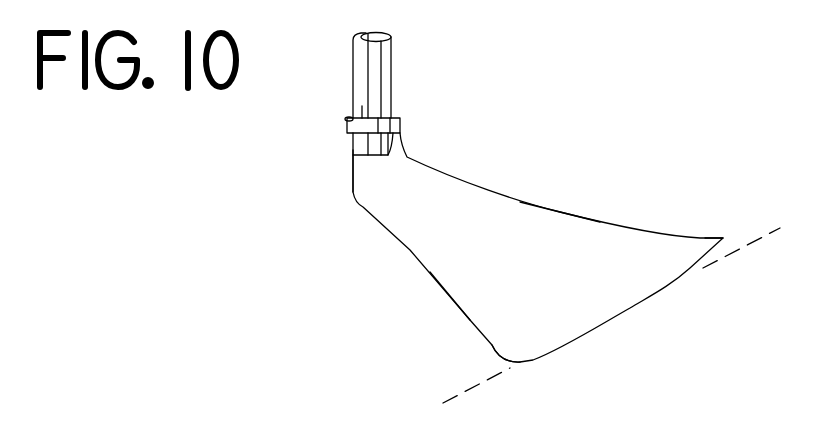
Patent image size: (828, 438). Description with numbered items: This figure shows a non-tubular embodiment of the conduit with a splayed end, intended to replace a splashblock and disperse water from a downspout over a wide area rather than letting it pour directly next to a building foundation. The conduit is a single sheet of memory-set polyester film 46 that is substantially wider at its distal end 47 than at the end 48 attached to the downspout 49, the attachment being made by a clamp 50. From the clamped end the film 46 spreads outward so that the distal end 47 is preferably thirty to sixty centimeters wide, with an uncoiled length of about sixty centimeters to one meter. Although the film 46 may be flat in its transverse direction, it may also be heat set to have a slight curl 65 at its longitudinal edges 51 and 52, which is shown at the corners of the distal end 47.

The memory-set polyester film 46 is at (437, 188).
The distal end 47 is at (663, 270).
The end attached to the downspout 48 is at (360, 173).
The downspout 49 is at (381, 62).
The clamp 50 is at (400, 120).
The longitudinal edge 51 is at (453, 300).
The longitudinal edge 52 is at (560, 212).
The slight curl 65 is at (705, 238).